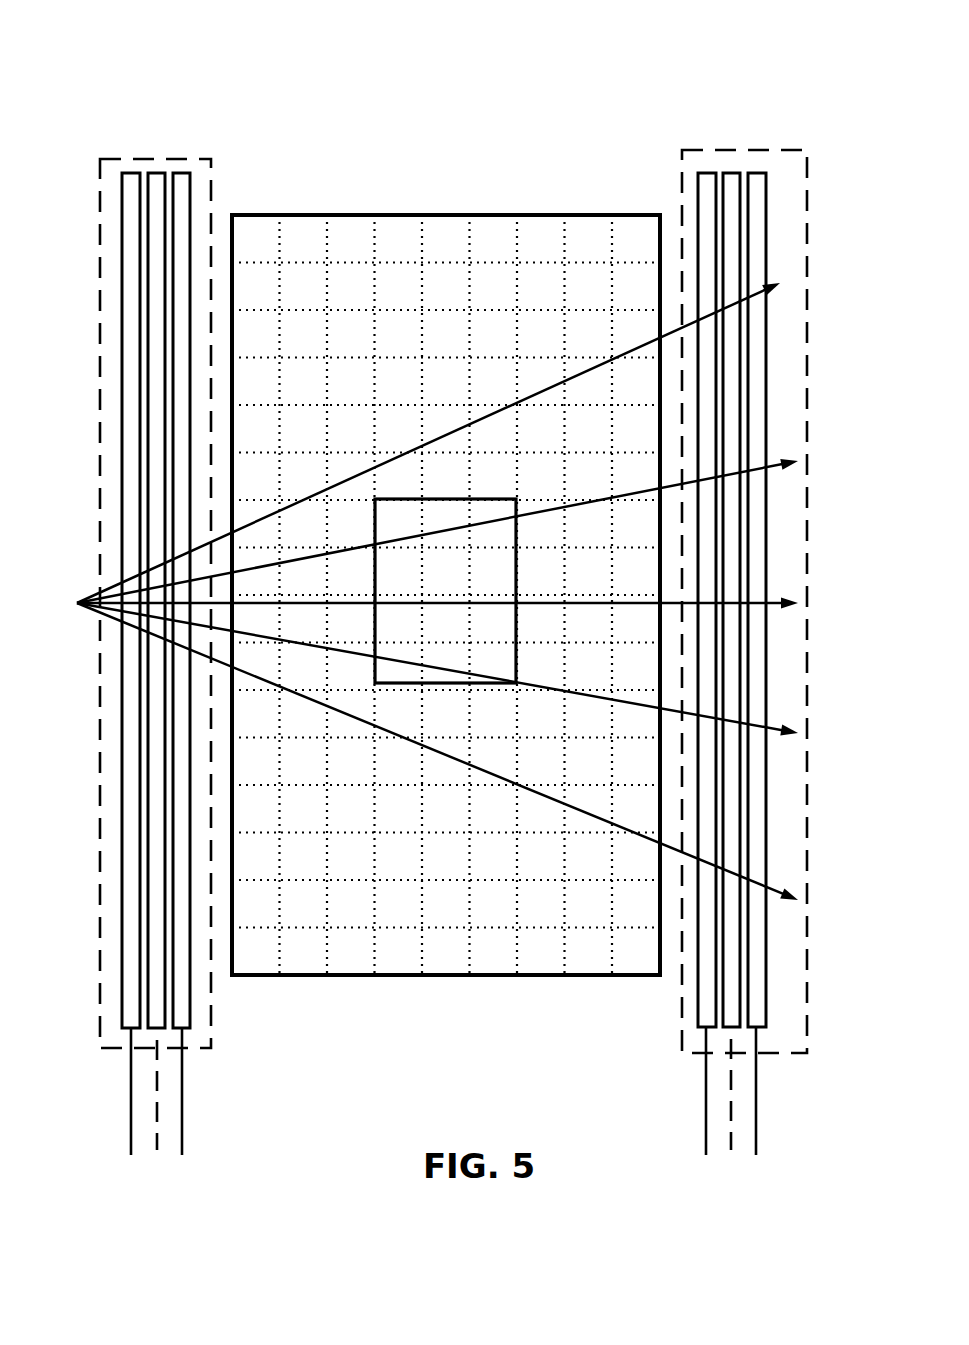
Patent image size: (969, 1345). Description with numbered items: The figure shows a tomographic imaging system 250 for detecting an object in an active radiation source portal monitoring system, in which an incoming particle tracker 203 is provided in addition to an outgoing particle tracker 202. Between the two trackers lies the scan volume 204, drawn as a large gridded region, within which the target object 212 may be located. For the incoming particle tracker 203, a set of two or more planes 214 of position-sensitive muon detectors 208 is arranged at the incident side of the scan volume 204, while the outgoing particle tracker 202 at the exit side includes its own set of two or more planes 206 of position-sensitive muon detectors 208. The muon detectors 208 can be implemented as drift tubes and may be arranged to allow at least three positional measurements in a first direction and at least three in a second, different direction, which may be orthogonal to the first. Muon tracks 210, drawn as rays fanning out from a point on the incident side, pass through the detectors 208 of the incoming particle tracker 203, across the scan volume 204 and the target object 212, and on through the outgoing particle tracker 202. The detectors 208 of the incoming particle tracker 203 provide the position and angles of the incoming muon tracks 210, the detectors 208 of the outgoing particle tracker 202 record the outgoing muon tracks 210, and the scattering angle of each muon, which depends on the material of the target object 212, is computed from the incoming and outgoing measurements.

The tomographic imaging system 250 is at (233, 94).
The scan volume 204 is at (441, 214).
The target object 212 is at (516, 570).
The incoming particle tracker 203 is at (211, 186).
The outgoing particle tracker 202 is at (807, 264).
The position-sensitive muon detectors 208 is at (156, 172).
The planes of position-sensitive muon detectors 214 is at (182, 1072).
The planes of position-sensitive muon detectors 206 is at (757, 1097).
The muon tracks 210 is at (77, 600).